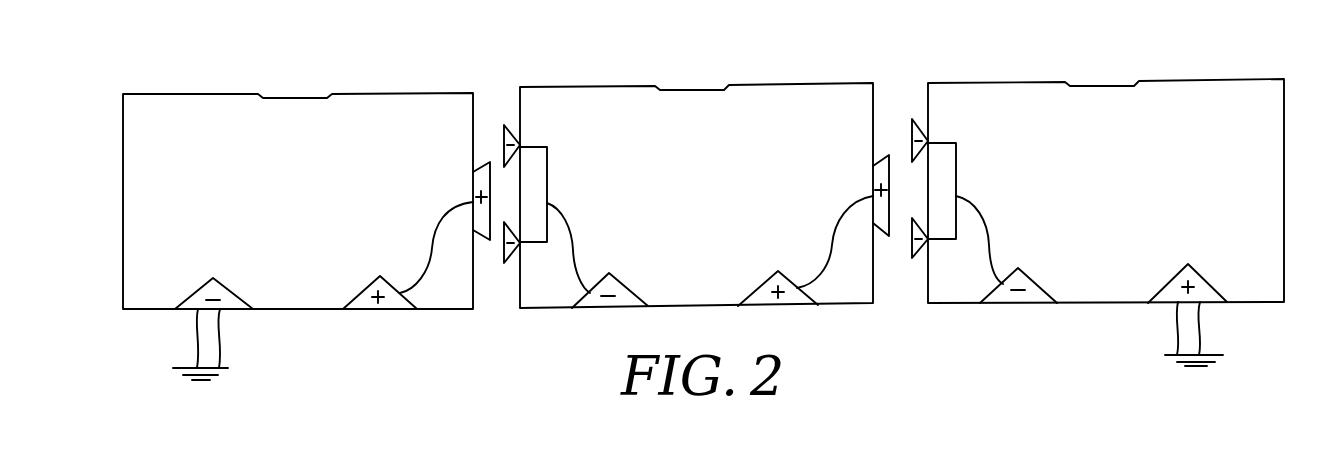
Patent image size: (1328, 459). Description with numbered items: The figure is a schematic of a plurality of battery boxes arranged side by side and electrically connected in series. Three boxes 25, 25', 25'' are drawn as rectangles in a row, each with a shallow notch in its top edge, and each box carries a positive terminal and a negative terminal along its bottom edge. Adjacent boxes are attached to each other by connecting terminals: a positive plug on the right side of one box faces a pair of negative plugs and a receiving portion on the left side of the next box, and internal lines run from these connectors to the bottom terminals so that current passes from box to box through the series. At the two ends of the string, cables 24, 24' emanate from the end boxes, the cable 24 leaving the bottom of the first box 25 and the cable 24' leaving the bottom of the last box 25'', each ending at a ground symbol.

The ground connection 24 is at (235, 344).
The ground connection 24' is at (1229, 334).
The box 25 is at (298, 178).
The box 25' is at (696, 177).
The box 25'' is at (1106, 168).